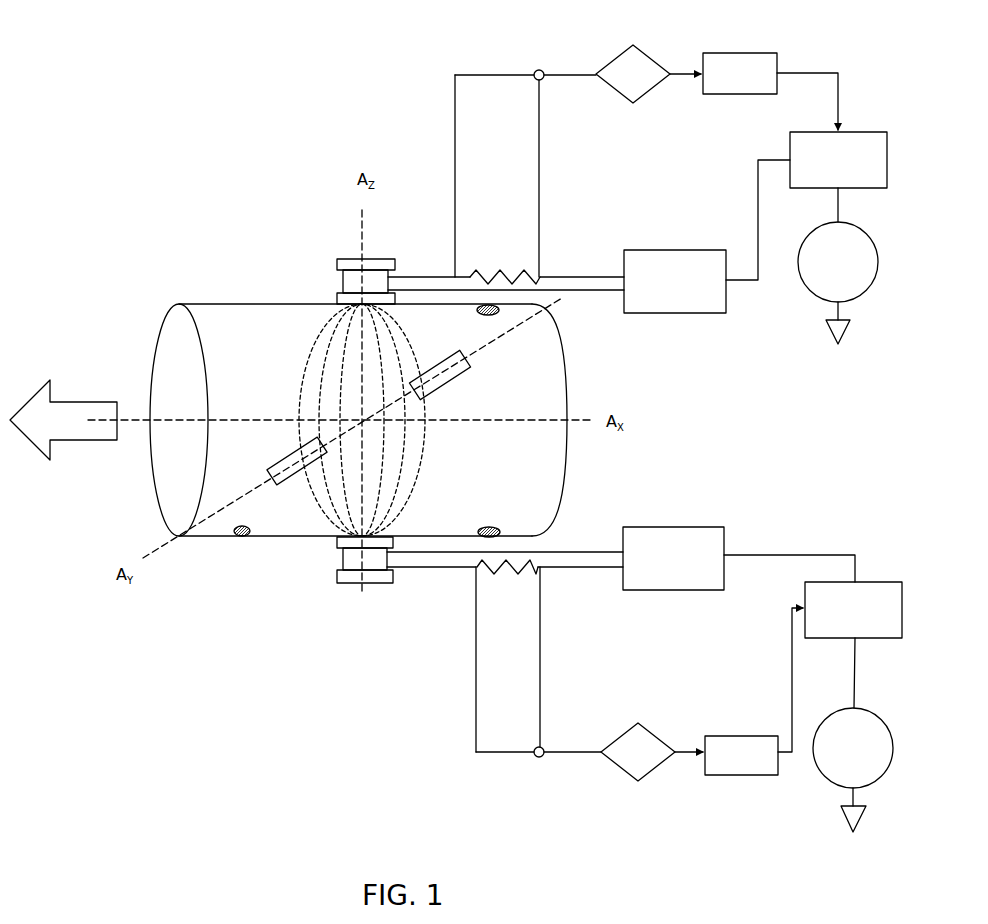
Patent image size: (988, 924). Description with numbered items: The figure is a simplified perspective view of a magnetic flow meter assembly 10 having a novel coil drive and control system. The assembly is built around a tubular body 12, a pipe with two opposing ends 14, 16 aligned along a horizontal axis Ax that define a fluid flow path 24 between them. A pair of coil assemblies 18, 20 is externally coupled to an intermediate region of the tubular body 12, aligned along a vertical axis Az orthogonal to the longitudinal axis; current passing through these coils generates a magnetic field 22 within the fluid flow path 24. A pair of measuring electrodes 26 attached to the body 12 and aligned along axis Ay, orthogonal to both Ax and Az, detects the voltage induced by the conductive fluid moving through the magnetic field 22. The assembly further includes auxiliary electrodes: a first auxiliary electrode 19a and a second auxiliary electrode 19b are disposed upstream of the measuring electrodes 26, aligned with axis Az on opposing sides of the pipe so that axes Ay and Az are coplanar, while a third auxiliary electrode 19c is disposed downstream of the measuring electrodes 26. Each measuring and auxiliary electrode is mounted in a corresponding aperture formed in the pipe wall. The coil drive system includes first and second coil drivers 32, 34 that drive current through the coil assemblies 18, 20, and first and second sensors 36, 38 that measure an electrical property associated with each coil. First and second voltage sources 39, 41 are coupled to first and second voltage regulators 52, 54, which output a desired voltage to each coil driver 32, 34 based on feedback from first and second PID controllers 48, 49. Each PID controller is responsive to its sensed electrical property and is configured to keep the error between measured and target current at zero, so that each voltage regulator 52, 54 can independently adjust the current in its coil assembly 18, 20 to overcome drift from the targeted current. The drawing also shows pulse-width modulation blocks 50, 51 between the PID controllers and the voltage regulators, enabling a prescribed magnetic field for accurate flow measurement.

The magnetic flow meter assembly 10 is at (140, 205).
The tubular body 12 is at (208, 302).
The end 14 is at (170, 368).
The end 16 is at (470, 357).
The coil assembly 18 is at (357, 258).
The first auxiliary electrode 19a is at (505, 309).
The second auxiliary electrode 19b is at (505, 531).
The third auxiliary electrode 19c is at (242, 545).
The coil assembly 20 is at (347, 585).
The magnetic field 22 is at (438, 442).
The fluid flow path 24 is at (63, 432).
The measuring electrodes 26 is at (273, 443).
The first coil driver 32 is at (670, 247).
The second coil driver 34 is at (702, 523).
The first sensor 36 is at (497, 265).
The second sensor 38 is at (507, 580).
The first voltage source 39 is at (885, 257).
The second voltage source 41 is at (867, 703).
The first PID controller 48 is at (652, 48).
The second PID controller 49 is at (650, 718).
The PWM 50 is at (750, 48).
The PWM 51 is at (747, 718).
The first voltage regulator 52 is at (862, 125).
The second voltage regulator 54 is at (875, 575).